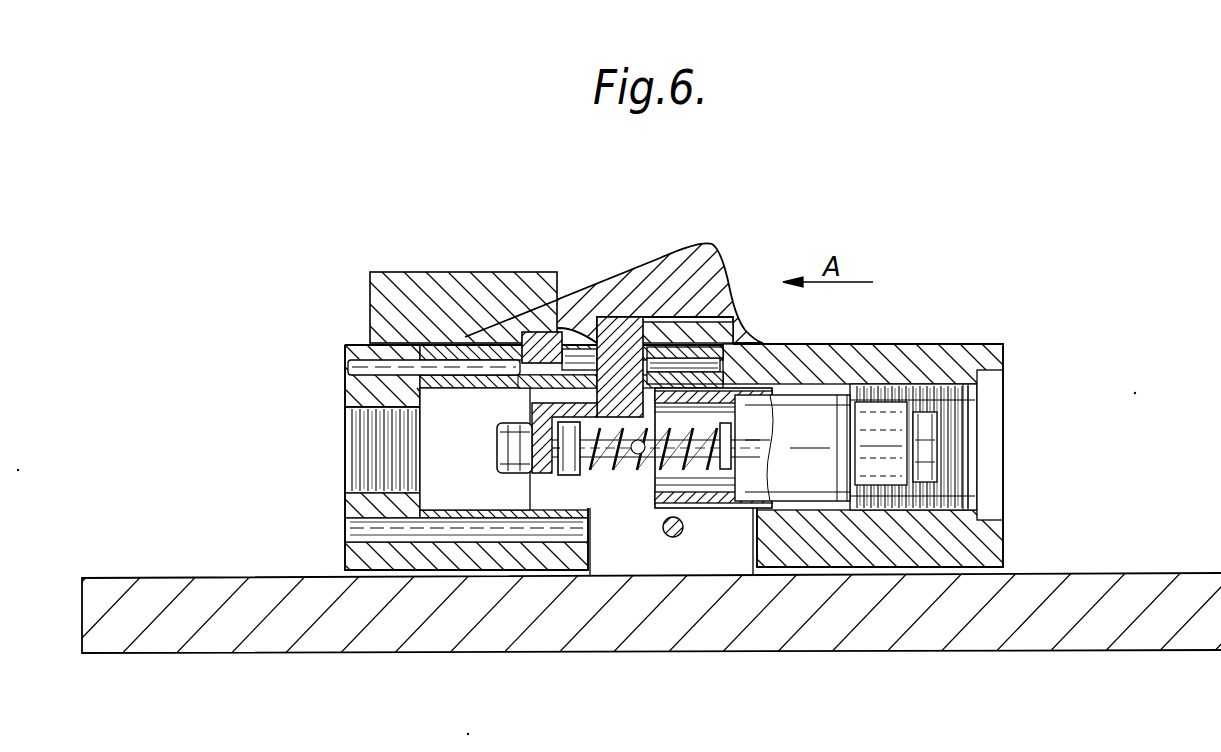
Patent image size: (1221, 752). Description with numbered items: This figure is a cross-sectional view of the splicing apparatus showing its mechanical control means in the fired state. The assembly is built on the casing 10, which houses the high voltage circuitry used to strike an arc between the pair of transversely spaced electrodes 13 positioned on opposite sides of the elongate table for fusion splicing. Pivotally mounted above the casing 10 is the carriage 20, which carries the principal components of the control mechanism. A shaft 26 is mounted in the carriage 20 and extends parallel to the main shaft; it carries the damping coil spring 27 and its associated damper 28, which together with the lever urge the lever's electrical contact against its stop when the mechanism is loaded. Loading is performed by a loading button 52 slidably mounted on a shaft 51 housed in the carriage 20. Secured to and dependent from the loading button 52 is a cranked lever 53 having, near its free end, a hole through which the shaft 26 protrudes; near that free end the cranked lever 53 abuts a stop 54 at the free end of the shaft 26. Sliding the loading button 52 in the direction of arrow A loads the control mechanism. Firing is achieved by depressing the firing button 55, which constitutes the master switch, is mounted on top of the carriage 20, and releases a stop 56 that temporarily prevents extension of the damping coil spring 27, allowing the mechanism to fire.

The casing 10 is at (984, 617).
The electrodes 13 is at (676, 536).
The carriage 20 is at (938, 339).
The shaft 26 is at (555, 473).
The damping coil spring 27 is at (618, 470).
The damper 28 is at (773, 490).
The shaft 51 is at (360, 362).
The loading button 52 is at (673, 278).
The cranked lever 53 is at (540, 480).
The stop 54 is at (505, 446).
The firing button 55 is at (436, 292).
The stop 56 is at (548, 340).